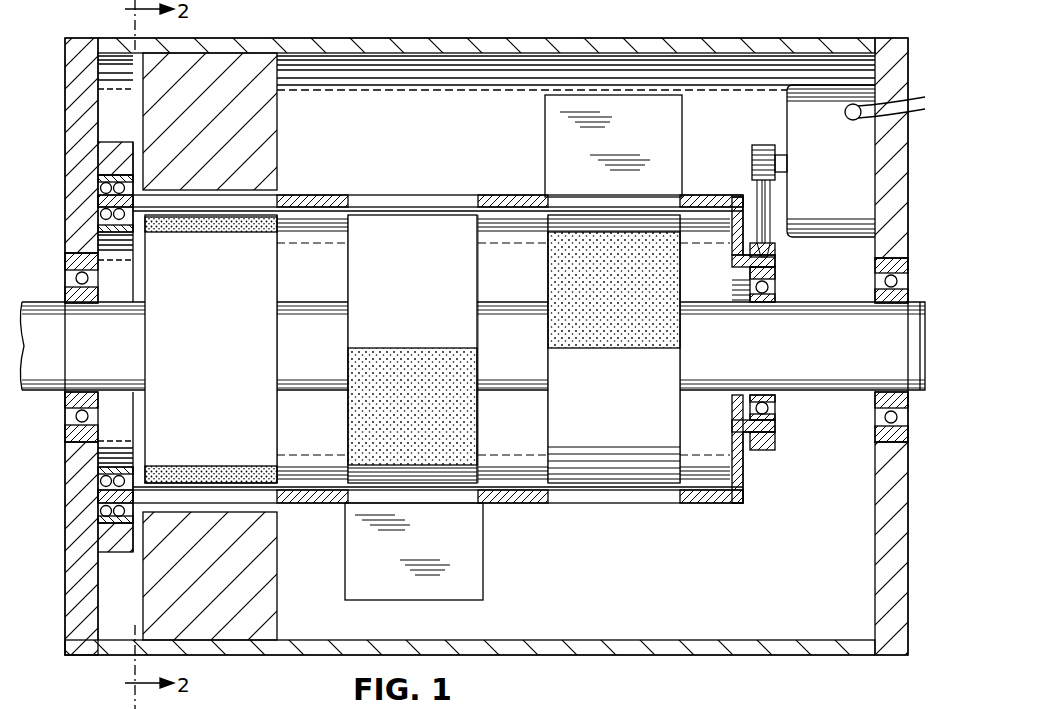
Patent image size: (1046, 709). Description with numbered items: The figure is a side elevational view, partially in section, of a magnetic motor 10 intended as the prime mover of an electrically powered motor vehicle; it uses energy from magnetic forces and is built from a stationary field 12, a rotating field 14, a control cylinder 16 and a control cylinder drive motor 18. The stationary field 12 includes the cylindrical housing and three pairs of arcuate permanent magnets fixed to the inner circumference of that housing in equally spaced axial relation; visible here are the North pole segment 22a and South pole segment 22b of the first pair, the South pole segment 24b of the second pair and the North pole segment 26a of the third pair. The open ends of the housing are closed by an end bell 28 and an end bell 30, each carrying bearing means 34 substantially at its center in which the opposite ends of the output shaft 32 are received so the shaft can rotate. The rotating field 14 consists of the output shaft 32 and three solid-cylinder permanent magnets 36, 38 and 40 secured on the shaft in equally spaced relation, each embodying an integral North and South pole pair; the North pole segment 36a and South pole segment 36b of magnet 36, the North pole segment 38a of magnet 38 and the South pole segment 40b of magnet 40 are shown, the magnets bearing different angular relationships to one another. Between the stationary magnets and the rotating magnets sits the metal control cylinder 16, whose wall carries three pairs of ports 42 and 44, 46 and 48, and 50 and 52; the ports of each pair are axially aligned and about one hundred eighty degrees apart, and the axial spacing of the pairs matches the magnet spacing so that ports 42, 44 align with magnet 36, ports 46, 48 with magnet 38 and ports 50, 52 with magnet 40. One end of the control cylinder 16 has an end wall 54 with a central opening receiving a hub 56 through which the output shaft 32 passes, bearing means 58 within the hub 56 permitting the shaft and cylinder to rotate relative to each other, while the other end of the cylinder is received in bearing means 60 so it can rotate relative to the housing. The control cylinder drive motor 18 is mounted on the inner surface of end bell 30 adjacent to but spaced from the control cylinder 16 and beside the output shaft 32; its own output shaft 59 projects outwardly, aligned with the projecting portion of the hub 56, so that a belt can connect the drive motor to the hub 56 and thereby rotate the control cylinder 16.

The magnetic motor 10 is at (443, 40).
The stationary field 12 is at (732, 650).
The rotating field 14 is at (402, 216).
The control cylinder 16 is at (714, 502).
The control cylinder drive motor 18 is at (838, 165).
The North pole segment 22a is at (283, 621).
The South pole segment 22b is at (283, 126).
The South pole segment 24b is at (483, 575).
The North pole segment 26a is at (548, 133).
The end bell 28 is at (65, 133).
The end bell 30 is at (908, 630).
The output shaft 32 is at (46, 392).
The bearing means 34 is at (67, 268).
The permanent magnet 36 is at (215, 359).
The North pole segment 36a is at (202, 231).
The South pole segment 36b is at (207, 465).
The permanent magnet 38 is at (415, 284).
The North pole segment 38a is at (412, 352).
The permanent magnet 40 is at (622, 421).
The South pole segment 40b is at (610, 346).
The port 42 is at (272, 192).
The port 44 is at (274, 503).
The port 46 is at (476, 196).
The port 48 is at (477, 504).
The port 50 is at (675, 195).
The port 52 is at (676, 504).
The end wall 54 is at (744, 496).
The hub 56 is at (773, 451).
The bearing means 58 is at (774, 296).
The output shaft 59 is at (782, 150).
The bearing means 60 is at (97, 483).